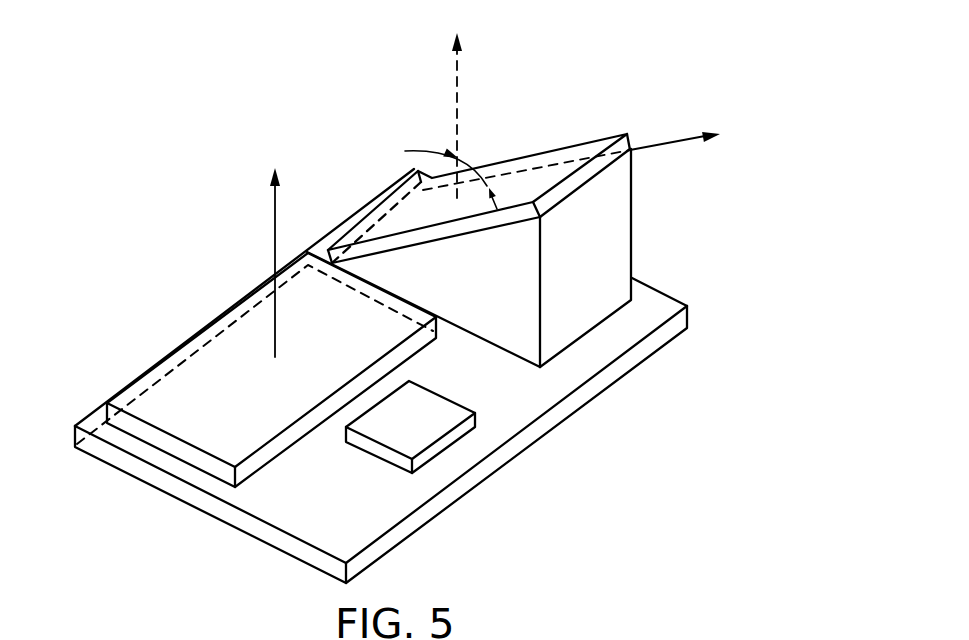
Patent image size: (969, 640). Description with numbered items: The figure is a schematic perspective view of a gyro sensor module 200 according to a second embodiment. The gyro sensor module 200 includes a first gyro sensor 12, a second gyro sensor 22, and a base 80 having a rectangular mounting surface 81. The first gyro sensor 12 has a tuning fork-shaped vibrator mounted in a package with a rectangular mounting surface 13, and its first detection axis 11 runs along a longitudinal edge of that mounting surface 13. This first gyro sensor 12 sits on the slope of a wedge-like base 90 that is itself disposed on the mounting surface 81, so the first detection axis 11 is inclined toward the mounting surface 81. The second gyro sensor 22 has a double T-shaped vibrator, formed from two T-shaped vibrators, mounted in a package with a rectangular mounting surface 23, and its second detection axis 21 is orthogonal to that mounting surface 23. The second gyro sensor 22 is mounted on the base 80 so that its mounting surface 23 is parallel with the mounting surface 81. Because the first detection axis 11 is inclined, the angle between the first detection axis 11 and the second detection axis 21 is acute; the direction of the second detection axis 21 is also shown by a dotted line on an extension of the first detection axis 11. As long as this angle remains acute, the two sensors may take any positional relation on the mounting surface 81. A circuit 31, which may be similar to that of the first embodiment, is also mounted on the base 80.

The gyro sensor module 200 is at (692, 31).
The first detection axis 11 is at (649, 145).
The first gyro sensor 12 is at (550, 150).
The mounting surface 13 is at (513, 198).
The second detection axis 21 is at (270, 240).
The second gyro sensor 22 is at (198, 333).
The mounting surface 23 is at (207, 385).
The circuit 31 is at (420, 430).
The base 80 is at (541, 424).
The mounting surface 81 is at (360, 520).
The base 90 is at (620, 225).